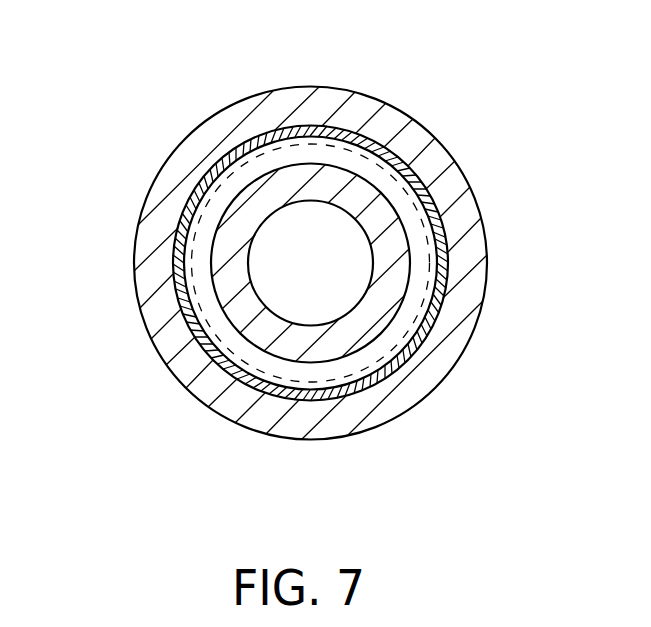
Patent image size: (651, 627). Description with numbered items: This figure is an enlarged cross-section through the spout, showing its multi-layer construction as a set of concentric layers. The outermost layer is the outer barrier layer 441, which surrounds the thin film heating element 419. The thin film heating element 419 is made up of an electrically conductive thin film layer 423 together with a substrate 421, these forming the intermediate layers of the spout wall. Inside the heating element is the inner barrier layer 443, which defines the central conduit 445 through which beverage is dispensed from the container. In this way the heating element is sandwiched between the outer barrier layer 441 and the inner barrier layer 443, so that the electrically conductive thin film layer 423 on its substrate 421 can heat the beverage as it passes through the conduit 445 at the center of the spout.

The outer barrier layer 441 is at (398, 122).
The electrically conductive thin film layer 423 is at (252, 140).
The substrate 421 is at (420, 335).
The thin film heating element 419 is at (284, 382).
The inner barrier layer 443 is at (232, 280).
The conduit 445 is at (373, 258).